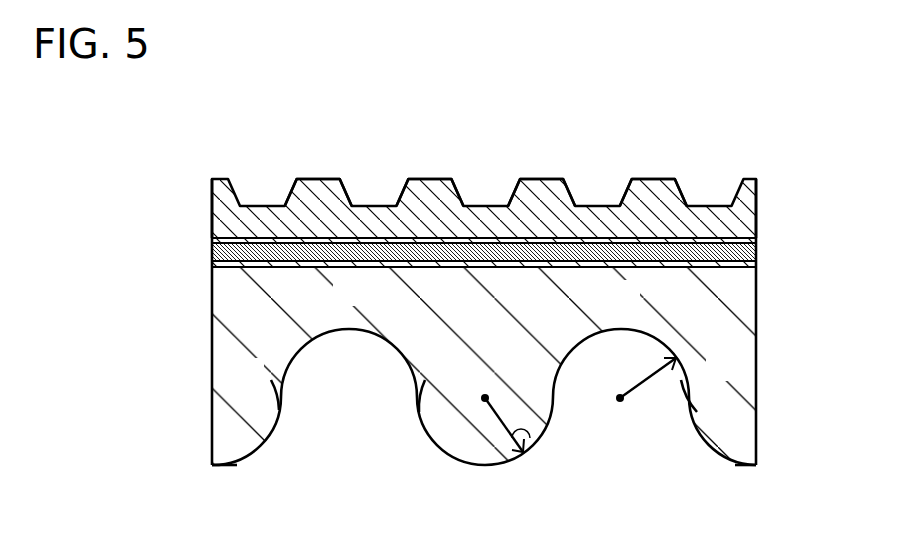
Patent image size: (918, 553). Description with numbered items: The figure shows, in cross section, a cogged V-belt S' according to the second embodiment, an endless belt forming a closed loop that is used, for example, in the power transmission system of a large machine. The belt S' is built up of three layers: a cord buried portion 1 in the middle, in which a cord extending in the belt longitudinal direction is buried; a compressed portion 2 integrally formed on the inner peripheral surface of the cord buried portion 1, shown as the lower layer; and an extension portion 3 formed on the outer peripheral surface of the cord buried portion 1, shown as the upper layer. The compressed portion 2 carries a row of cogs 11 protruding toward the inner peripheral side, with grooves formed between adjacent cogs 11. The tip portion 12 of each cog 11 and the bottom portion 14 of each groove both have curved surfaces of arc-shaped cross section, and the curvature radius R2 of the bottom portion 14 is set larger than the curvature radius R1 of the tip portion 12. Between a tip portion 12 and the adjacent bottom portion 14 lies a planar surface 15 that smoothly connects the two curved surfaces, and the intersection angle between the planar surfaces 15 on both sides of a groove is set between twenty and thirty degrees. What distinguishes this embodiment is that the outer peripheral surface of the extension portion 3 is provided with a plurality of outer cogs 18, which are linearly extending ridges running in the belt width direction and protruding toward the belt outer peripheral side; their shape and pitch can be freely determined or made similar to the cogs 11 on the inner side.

The cord buried portion 1 is at (203, 249).
The compressed portion 2 is at (212, 353).
The extension portion 3 is at (212, 217).
The cog 11 is at (237, 429).
The tip portion 12 is at (236, 466).
The bottom portion 14 is at (352, 329).
The planar surface 15 is at (279, 397).
The outer cog 18 is at (318, 184).
The curvature radius of tip portion R1 is at (537, 444).
The curvature radius of bottom portion R2 is at (648, 387).
The belt S' is at (804, 111).